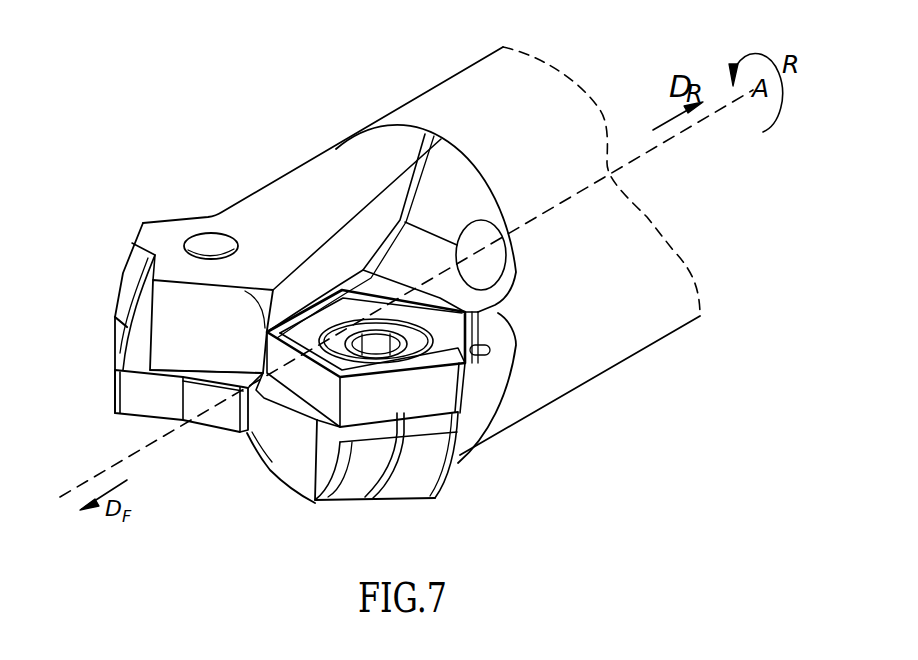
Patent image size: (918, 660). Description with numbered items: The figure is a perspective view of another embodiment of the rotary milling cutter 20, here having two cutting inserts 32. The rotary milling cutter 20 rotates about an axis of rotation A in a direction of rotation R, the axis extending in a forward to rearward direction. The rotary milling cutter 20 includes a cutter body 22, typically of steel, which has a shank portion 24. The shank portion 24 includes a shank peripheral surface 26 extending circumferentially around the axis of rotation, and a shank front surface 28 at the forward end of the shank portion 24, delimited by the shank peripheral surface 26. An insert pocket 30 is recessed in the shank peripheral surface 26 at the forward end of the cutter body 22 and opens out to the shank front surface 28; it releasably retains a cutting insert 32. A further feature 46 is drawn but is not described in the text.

The rotary milling cutter 20 is at (135, 192).
The cutter body 22 is at (665, 365).
The shank portion 24 is at (625, 385).
The shank peripheral surface 26 is at (590, 357).
The shank front surface 28 is at (290, 445).
The insert pocket 30 is at (485, 330).
The cutting insert 32 is at (138, 406).
The central cutting insert 46 is at (442, 382).